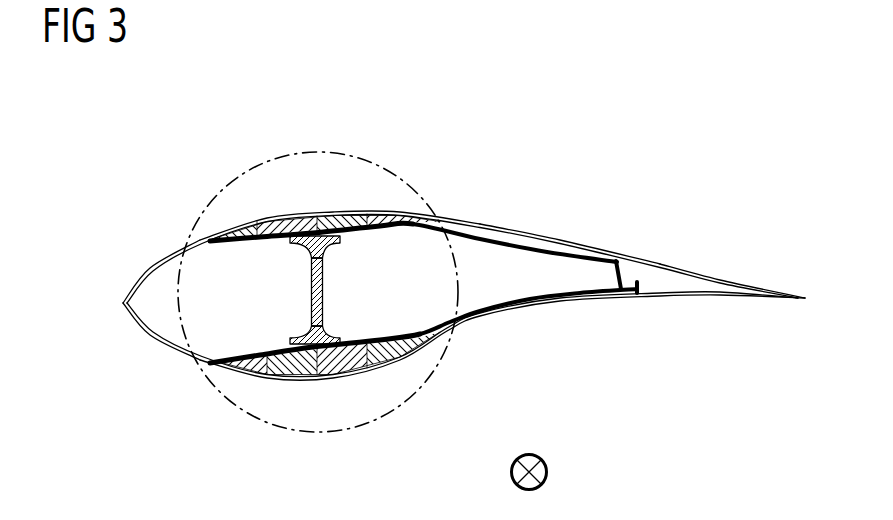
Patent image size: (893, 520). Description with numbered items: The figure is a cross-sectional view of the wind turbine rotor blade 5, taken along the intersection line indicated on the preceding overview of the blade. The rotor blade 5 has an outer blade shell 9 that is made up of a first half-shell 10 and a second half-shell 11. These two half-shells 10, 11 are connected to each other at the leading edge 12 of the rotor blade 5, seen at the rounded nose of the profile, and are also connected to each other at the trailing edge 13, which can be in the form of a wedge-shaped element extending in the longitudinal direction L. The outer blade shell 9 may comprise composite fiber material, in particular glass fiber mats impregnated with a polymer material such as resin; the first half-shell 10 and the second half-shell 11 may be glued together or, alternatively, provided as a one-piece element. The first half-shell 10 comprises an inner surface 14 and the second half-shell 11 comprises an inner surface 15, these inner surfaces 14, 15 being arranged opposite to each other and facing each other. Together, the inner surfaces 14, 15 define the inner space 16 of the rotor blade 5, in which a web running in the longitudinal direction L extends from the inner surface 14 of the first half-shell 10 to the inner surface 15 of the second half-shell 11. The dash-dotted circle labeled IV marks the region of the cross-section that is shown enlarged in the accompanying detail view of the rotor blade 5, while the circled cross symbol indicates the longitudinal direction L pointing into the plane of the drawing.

The rotor blade 5 is at (345, 96).
The outer blade shell 9 is at (472, 209).
The first half-shell 10 is at (497, 324).
The second half-shell 11 is at (527, 232).
The leading edge 12 is at (120, 308).
The trailing edge 13 is at (713, 278).
The inner surface 14 is at (573, 289).
The inner surface 15 is at (536, 254).
The inner space 16 is at (234, 315).
The detail view region IV is at (227, 194).
The longitudinal direction L is at (548, 469).